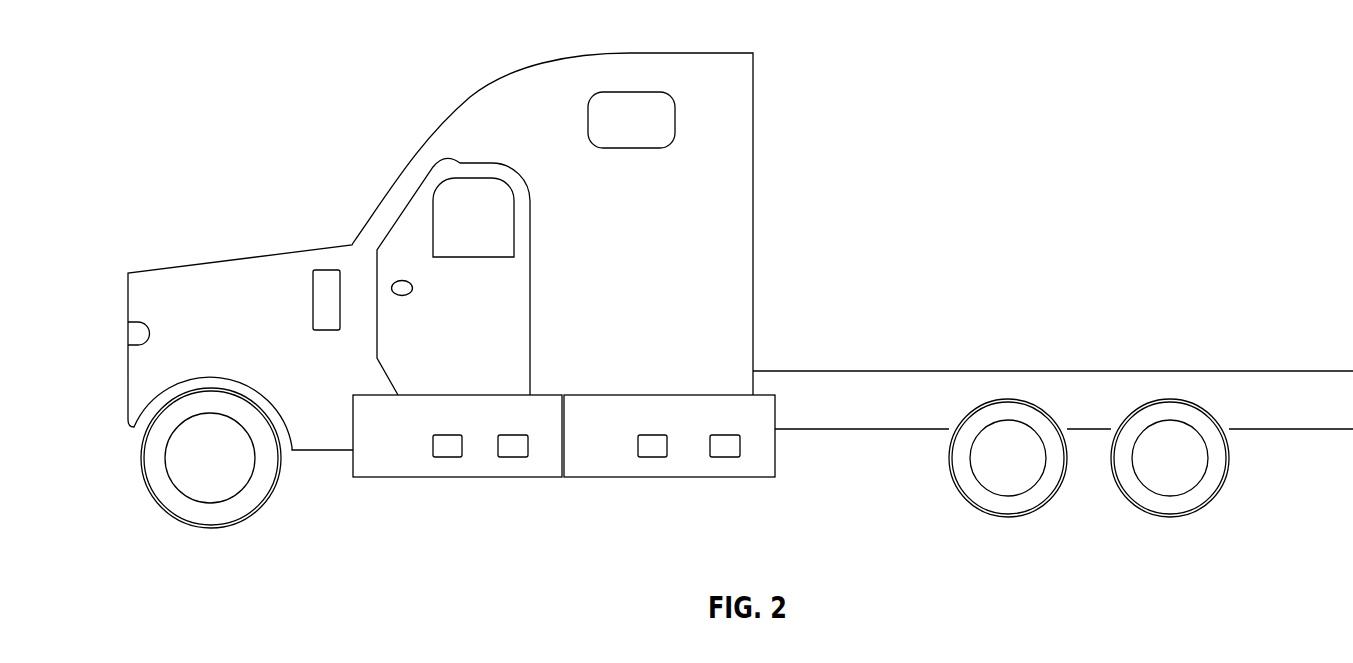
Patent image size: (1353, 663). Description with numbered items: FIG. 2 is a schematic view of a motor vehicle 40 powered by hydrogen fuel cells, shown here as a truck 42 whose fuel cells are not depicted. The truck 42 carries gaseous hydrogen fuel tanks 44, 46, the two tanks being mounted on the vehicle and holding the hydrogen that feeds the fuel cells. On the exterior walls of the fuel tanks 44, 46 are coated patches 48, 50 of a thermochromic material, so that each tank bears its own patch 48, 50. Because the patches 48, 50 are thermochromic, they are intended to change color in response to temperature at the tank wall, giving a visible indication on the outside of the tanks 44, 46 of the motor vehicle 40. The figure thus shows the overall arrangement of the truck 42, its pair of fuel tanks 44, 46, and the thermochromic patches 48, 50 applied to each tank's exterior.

The motor vehicle 40 is at (740, 287).
The truck 42 is at (481, 93).
The fuel tank 44 is at (743, 477).
The fuel tank 46 is at (377, 477).
The patch 48 is at (449, 457).
The patch 50 is at (514, 457).